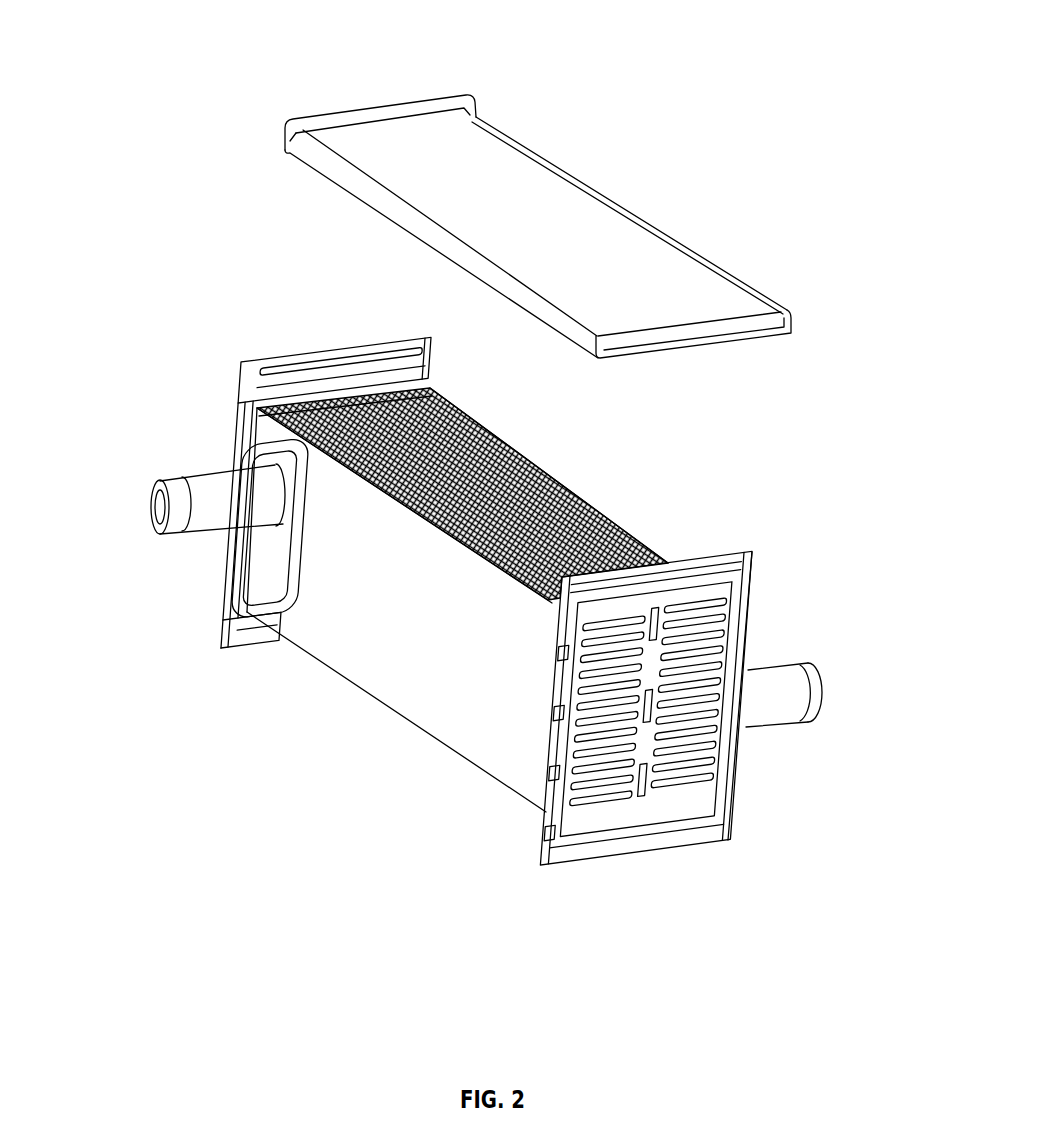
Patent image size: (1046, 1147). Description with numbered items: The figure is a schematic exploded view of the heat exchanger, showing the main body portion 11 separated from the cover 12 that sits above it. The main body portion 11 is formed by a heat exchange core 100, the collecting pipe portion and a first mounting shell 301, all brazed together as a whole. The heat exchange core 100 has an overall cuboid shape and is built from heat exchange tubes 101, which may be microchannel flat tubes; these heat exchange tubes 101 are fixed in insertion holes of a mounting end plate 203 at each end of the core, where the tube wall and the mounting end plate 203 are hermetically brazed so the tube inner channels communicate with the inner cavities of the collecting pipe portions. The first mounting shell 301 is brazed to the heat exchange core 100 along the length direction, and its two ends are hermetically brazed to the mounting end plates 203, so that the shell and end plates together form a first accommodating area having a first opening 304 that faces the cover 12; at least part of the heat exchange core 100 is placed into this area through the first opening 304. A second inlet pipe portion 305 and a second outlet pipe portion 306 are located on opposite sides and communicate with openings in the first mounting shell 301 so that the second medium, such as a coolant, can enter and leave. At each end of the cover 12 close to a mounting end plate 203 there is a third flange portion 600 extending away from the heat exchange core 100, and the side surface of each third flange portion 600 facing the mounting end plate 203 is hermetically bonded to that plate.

The main body portion 11 is at (498, 607).
The cover 12 is at (560, 183).
The heat exchange core 100 is at (540, 460).
The heat exchange tube 101 is at (735, 560).
The mounting end plate 203 is at (245, 362).
The first mounting shell 301 is at (357, 635).
The first opening 304 is at (635, 528).
The second inlet pipe portion 305 is at (195, 490).
The second outlet pipe portion 306 is at (782, 697).
The third flange portion 600 is at (385, 97).